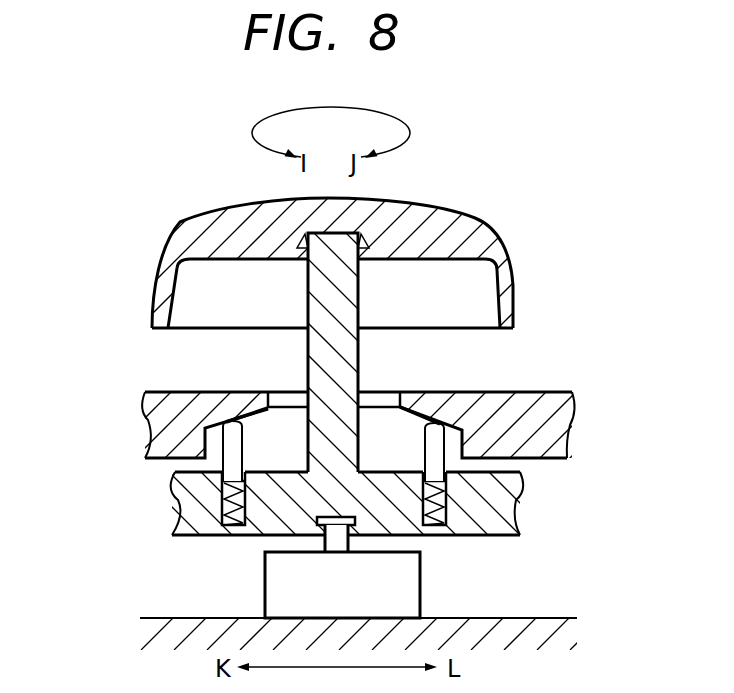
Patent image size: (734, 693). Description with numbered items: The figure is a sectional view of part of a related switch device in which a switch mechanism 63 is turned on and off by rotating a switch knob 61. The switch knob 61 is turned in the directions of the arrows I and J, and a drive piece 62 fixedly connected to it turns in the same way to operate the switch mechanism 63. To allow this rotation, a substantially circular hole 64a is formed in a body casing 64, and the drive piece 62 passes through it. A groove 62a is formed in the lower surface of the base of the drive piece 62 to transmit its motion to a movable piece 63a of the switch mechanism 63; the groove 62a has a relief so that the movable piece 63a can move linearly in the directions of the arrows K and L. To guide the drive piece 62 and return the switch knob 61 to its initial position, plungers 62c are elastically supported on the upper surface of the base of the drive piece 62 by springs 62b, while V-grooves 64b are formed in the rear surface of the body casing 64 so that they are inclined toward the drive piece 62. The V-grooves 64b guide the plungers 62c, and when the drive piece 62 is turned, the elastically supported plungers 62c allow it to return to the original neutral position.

The switch knob 61 is at (237, 222).
The drive piece 62 is at (322, 285).
The groove 62a is at (317, 522).
The springs 62b is at (240, 533).
The plungers 62c is at (228, 421).
The switch mechanism 63 is at (422, 603).
The movable piece 63a is at (340, 543).
The body casing 64 is at (540, 403).
The circular hole 64a is at (372, 397).
The V-grooves 64b is at (275, 420).